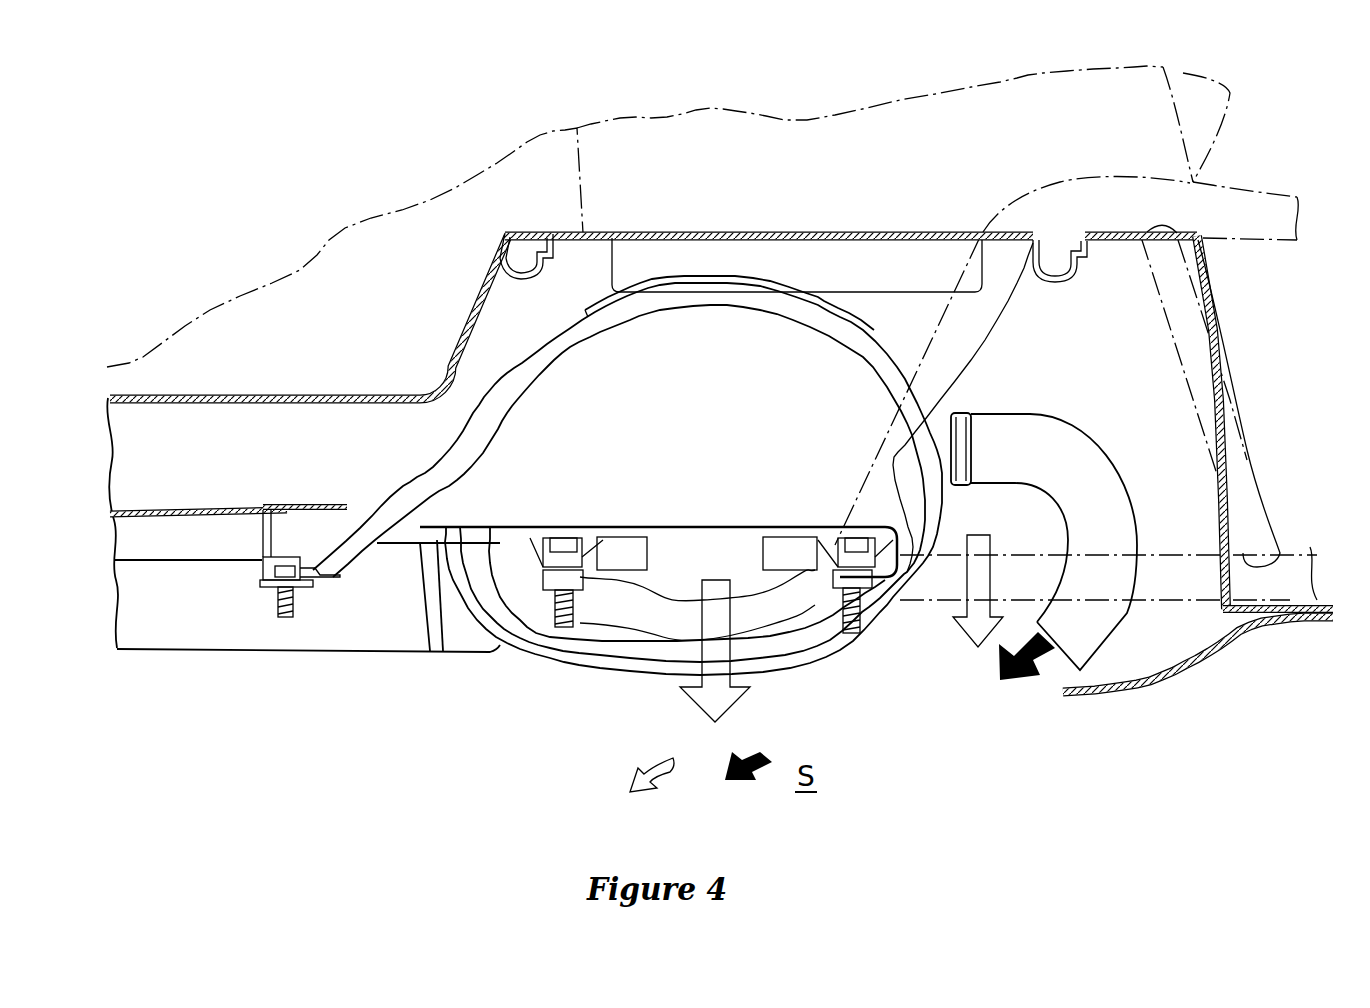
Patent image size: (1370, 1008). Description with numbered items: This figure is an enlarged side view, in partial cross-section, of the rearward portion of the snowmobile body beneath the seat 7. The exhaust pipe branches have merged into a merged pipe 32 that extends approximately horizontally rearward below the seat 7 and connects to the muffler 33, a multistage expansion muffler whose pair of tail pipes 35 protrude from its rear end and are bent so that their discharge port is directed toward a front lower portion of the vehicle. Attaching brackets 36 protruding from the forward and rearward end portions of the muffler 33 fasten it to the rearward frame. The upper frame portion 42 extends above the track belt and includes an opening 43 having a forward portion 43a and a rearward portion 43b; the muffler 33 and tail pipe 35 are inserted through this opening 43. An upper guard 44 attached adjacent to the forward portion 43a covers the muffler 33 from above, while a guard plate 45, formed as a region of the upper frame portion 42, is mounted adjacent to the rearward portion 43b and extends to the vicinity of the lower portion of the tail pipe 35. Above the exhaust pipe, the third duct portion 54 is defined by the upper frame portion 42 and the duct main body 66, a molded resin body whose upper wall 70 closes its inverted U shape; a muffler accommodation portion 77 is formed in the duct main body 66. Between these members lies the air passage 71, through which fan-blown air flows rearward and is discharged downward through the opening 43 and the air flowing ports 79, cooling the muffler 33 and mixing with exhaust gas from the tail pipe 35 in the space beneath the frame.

The seat 7 is at (357, 263).
The merged pipe 32 is at (227, 650).
The muffler 33 is at (571, 667).
The tail pipe 35 is at (1130, 503).
The attaching bracket 36 is at (625, 560).
The upper frame portion 42 is at (125, 508).
The opening 43 is at (1180, 700).
The forward portion of the opening 43a is at (267, 513).
The rearward portion of the opening 43b is at (1063, 693).
The upper guard 44 is at (712, 330).
The guard plate 45 is at (1152, 685).
The third duct portion 54 is at (270, 388).
The duct main body 66 is at (186, 394).
The upper wall 70 is at (917, 232).
The air passage 71 is at (233, 462).
The muffler accommodation portion 77 is at (916, 321).
The air flowing port 79 is at (633, 236).